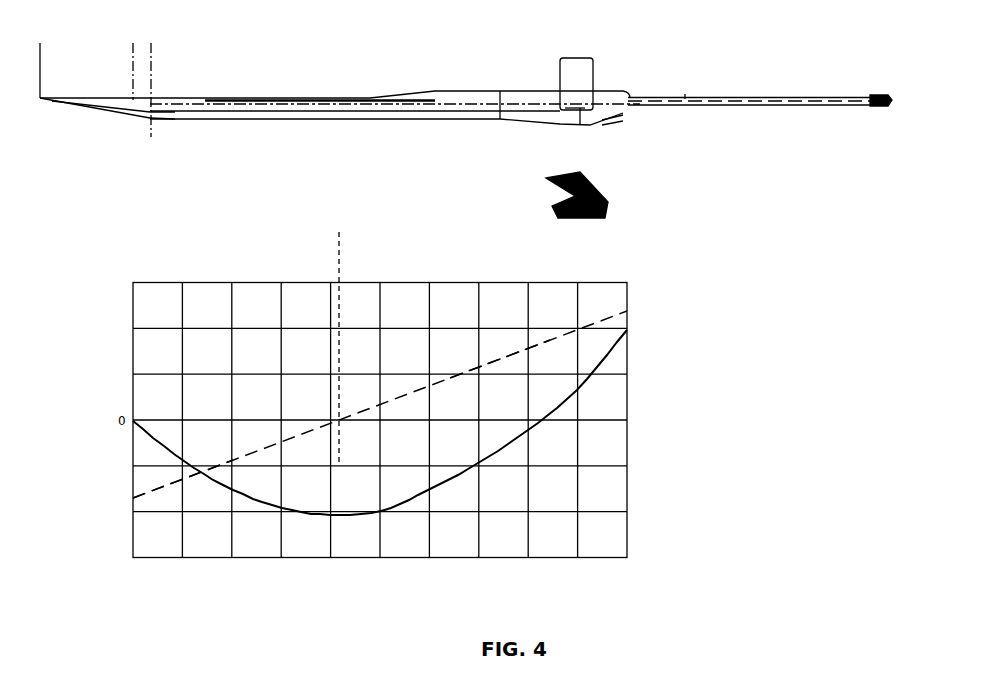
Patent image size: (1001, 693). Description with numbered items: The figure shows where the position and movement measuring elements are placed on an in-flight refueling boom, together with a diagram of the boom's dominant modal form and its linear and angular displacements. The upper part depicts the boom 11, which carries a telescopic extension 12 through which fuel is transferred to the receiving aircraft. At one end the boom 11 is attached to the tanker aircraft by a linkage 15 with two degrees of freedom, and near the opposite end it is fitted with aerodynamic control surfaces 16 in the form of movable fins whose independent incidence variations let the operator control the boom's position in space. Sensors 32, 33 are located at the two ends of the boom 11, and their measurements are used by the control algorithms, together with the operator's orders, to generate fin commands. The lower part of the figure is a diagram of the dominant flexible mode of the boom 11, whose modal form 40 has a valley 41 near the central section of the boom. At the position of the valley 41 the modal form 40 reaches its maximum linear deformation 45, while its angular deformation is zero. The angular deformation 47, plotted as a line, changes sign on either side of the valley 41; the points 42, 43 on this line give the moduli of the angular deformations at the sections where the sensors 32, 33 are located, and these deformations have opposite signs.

The boom 11 is at (358, 97).
The telescopic extension 12 is at (757, 97).
The linkage 15 is at (133, 100).
The aerodynamic control surfaces 16 is at (597, 67).
The sensor 32 is at (148, 117).
The sensor 33 is at (589, 126).
The modal form 40 is at (603, 200).
The valley 41 is at (339, 232).
The point 42 is at (133, 498).
The point 43 is at (592, 323).
The maximum linear deformation 45 is at (612, 357).
The angular deformation 47 is at (498, 367).